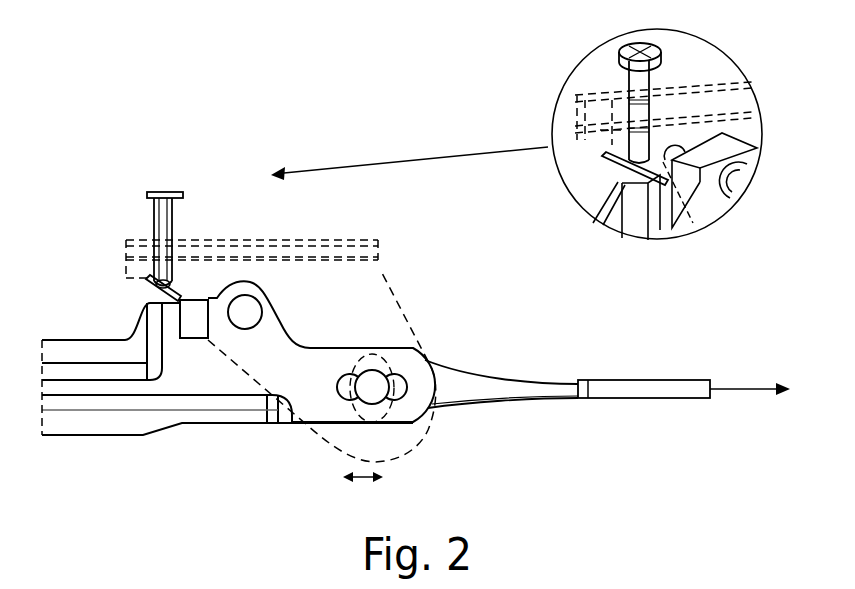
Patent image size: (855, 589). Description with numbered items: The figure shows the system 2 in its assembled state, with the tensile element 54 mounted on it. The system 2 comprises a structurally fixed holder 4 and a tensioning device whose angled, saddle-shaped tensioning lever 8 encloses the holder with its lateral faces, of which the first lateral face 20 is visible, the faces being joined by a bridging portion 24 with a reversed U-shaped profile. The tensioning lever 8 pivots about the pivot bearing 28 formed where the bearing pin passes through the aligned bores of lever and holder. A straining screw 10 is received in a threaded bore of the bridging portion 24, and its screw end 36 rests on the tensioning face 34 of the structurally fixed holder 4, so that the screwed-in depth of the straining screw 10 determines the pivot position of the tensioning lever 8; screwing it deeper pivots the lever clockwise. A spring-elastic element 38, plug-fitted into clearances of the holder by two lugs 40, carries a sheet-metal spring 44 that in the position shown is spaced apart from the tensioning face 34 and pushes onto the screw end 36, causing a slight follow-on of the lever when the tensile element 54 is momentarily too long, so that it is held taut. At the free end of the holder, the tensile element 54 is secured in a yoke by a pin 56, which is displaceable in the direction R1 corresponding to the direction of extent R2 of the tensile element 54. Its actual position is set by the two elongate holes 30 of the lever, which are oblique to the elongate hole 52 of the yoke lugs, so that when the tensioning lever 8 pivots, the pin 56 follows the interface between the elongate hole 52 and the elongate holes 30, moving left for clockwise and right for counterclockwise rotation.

The system 2 is at (280, 127).
The structurally fixed holder 4 is at (183, 415).
The tensioning lever 8 is at (372, 288).
The straining screw 10 is at (162, 217).
The first lateral face 20 is at (343, 331).
The bridging portion 24 is at (370, 233).
The pivot bearing 28 is at (259, 281).
The elongate holes 30 is at (378, 350).
The tensioning face 34 is at (160, 292).
The screw end 36 is at (156, 276).
The spring-elastic element 38 is at (198, 282).
The lugs 40 is at (192, 325).
The sheet-metal spring 44 is at (179, 296).
The elongate hole 52 is at (438, 362).
The tensile element 54 is at (580, 384).
The pin 56 is at (380, 385).
The displacement direction R1 is at (363, 493).
The direction of extent R2 is at (735, 395).